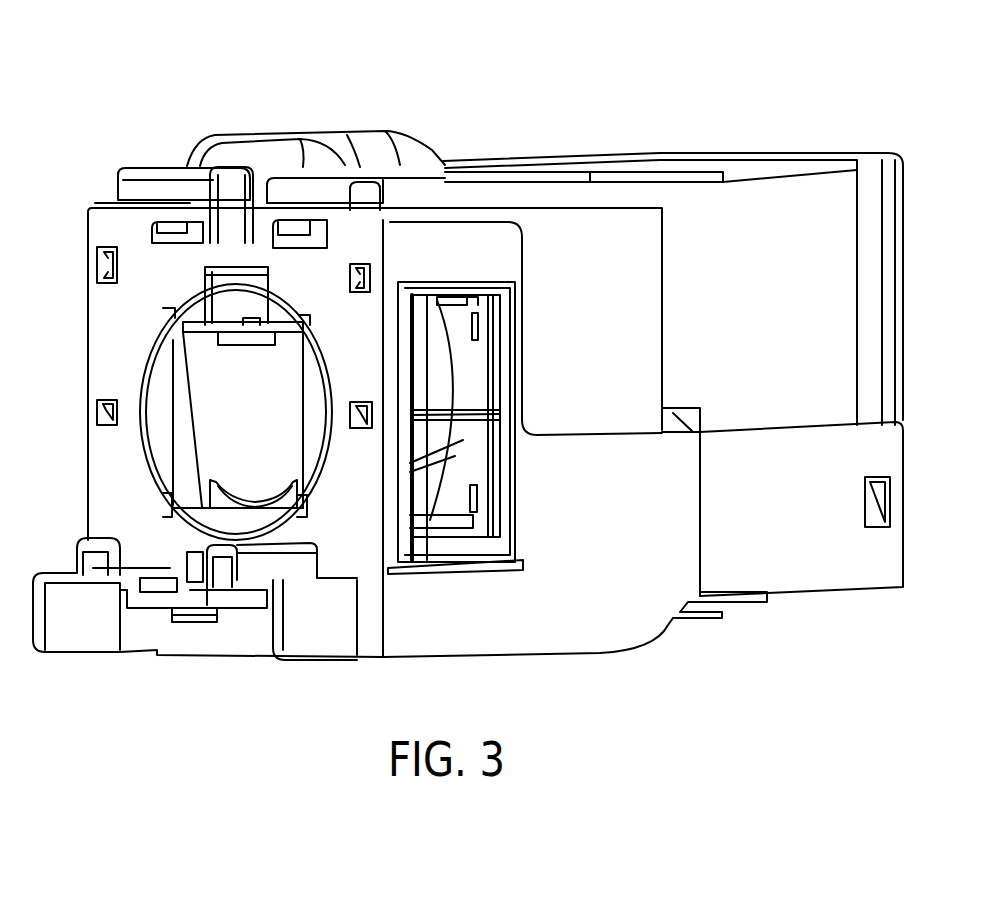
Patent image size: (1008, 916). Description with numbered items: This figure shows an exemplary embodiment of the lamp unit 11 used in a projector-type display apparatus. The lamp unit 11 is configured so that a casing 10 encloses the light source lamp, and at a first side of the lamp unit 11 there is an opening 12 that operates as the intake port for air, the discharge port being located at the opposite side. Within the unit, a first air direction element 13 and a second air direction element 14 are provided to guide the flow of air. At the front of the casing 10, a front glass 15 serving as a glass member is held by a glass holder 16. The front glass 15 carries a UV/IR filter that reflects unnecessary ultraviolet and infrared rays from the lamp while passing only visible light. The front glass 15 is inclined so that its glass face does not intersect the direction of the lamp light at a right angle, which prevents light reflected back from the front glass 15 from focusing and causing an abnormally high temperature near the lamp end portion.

The casing 10 is at (136, 176).
The lamp unit 11 is at (283, 97).
The opening 12 is at (438, 360).
The first air direction element 13 is at (423, 357).
The second air direction element 14 is at (487, 400).
The front glass 15 is at (285, 437).
The glass holder 16 is at (190, 443).